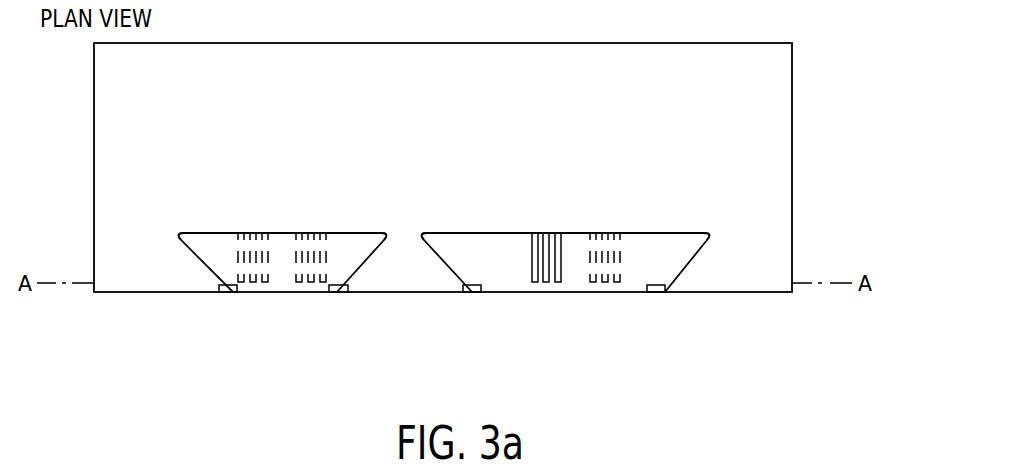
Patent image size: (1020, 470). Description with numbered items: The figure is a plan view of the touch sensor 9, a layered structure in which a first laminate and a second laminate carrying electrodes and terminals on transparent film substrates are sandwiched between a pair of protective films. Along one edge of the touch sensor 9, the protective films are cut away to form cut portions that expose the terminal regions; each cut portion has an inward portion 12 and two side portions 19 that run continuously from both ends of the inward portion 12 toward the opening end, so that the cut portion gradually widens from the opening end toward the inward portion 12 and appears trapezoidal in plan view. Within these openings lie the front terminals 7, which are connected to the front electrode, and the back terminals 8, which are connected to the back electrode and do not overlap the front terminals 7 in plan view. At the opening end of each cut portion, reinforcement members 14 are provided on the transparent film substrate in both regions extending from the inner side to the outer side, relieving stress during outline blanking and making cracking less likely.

The touch sensor 9 is at (888, 41).
The inward portion 12 is at (213, 233).
The side portions 19 is at (185, 236).
The back terminals 8 is at (263, 233).
The front terminals 7 is at (557, 233).
The reinforcement members 14 is at (231, 293).